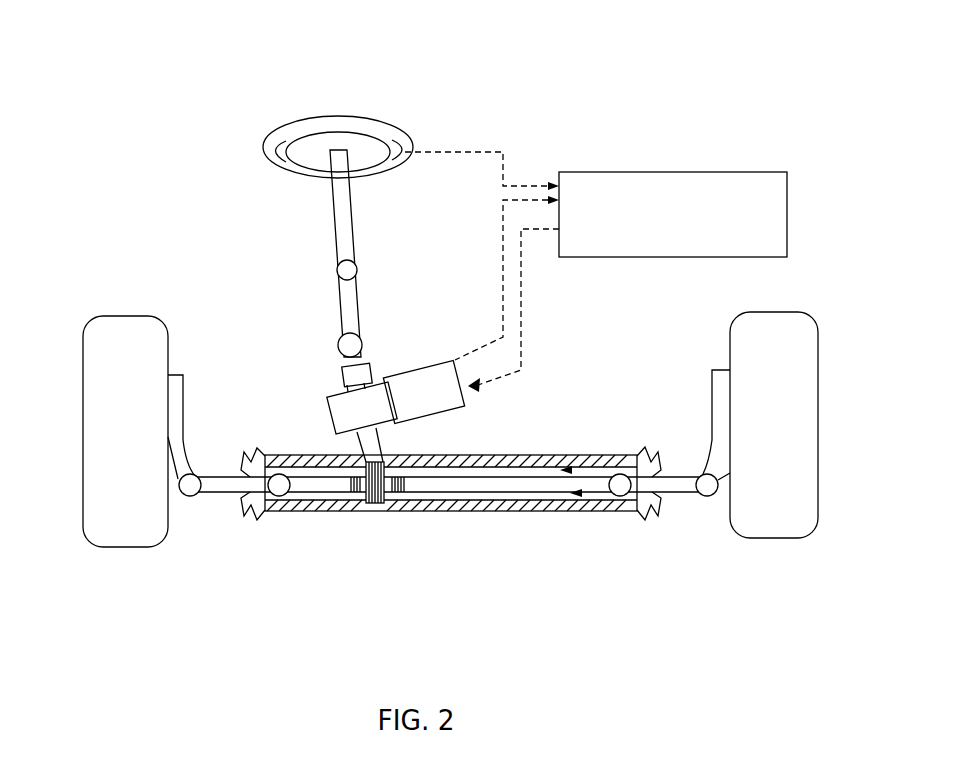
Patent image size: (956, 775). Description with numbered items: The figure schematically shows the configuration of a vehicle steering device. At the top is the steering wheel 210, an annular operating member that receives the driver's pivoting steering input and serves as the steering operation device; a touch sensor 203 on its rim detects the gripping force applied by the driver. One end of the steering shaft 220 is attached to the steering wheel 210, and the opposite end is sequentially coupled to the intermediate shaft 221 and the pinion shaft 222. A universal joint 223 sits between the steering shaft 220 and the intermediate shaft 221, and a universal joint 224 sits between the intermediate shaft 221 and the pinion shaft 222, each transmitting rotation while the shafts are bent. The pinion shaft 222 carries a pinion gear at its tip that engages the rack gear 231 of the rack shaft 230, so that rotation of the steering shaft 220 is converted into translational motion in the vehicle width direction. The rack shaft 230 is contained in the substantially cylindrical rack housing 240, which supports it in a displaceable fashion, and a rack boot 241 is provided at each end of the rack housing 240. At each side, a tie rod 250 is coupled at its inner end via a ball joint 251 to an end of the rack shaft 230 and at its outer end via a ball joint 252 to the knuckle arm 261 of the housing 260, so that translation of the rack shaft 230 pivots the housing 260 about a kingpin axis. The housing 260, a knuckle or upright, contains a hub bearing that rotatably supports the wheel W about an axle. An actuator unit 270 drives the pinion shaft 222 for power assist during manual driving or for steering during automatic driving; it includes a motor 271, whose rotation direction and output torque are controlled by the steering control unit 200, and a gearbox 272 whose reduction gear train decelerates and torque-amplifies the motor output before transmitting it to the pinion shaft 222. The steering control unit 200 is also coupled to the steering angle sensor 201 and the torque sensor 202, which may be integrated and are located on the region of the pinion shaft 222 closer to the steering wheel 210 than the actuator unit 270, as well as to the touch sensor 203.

The steering control unit 200 is at (714, 172).
The steering angle sensor 201 is at (341, 373).
The torque sensor 202 is at (152, 180).
The touch sensor 203 is at (397, 148).
The steering wheel 210 is at (302, 125).
The steering shaft 220 is at (339, 217).
The intermediate shaft 221 is at (354, 297).
The pinion shaft 222 is at (363, 447).
The universal joint 223 is at (338, 270).
The universal joint 224 is at (347, 342).
The rack shaft 230 is at (535, 492).
The rack gear 231 is at (410, 508).
The rack housing 240 is at (605, 508).
The rack boot 241 is at (646, 512).
The tie rod 250 is at (238, 492).
The ball joint 251 is at (279, 492).
The ball joint 252 is at (197, 494).
The housing 260 is at (173, 418).
The knuckle arm 261 is at (177, 481).
The actuator unit 270 is at (300, 373).
The motor 271 is at (445, 365).
The gearbox 272 is at (333, 417).
The wheel W is at (115, 545).